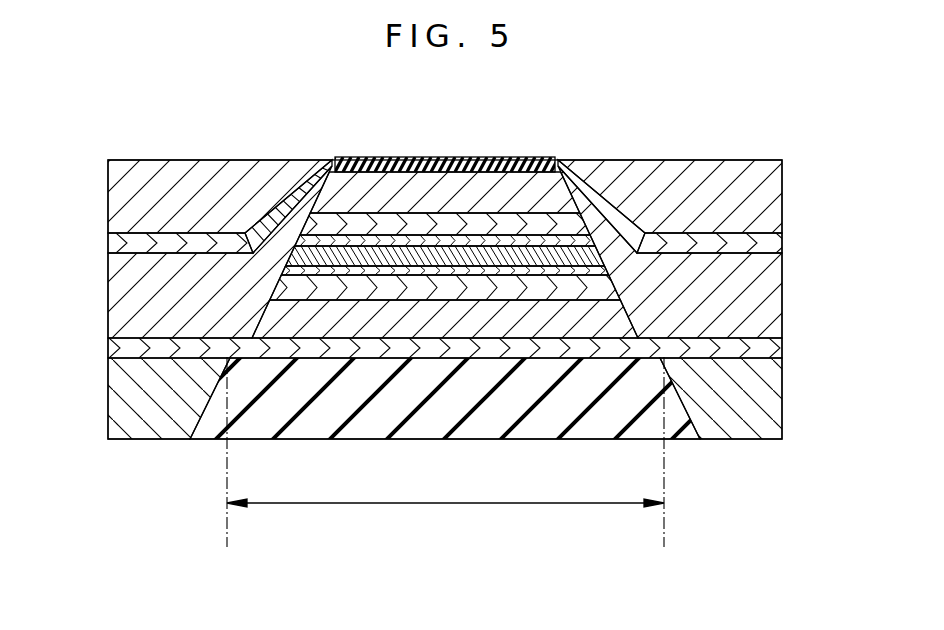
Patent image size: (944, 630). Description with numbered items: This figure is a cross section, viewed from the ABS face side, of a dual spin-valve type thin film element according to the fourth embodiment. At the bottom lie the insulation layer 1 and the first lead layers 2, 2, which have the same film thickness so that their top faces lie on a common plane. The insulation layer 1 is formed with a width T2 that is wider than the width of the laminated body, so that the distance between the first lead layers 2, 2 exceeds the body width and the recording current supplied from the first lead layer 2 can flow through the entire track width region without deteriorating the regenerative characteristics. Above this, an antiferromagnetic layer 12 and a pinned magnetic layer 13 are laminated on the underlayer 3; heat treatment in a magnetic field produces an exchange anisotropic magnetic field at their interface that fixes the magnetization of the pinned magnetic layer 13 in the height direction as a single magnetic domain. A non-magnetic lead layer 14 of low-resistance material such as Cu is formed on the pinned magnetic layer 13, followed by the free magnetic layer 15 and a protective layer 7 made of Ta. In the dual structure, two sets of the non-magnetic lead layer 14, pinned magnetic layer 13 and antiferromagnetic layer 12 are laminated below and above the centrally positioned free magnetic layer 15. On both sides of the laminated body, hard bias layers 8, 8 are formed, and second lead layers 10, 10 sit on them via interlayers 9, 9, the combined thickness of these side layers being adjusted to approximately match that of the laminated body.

The insulation layer 1 is at (576, 398).
The first lead layer 2 is at (128, 397).
The underlayer 3 is at (763, 352).
The protective layer 7 is at (460, 158).
The hard bias layer 8 is at (127, 295).
The interlayer 9 is at (128, 244).
The second lead layer 10 is at (128, 193).
The antiferromagnetic layer 12 is at (368, 300).
The pinned magnetic layer 13 is at (425, 278).
The non-magnetic lead layer 14 is at (528, 273).
The free magnetic layer 15 is at (548, 255).
The width of the insulation layer T2 is at (445, 452).